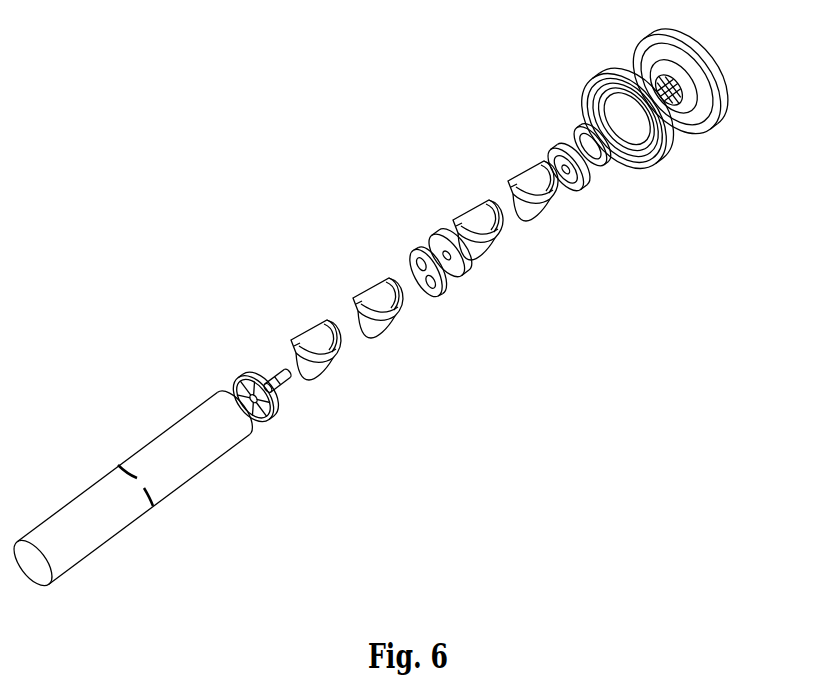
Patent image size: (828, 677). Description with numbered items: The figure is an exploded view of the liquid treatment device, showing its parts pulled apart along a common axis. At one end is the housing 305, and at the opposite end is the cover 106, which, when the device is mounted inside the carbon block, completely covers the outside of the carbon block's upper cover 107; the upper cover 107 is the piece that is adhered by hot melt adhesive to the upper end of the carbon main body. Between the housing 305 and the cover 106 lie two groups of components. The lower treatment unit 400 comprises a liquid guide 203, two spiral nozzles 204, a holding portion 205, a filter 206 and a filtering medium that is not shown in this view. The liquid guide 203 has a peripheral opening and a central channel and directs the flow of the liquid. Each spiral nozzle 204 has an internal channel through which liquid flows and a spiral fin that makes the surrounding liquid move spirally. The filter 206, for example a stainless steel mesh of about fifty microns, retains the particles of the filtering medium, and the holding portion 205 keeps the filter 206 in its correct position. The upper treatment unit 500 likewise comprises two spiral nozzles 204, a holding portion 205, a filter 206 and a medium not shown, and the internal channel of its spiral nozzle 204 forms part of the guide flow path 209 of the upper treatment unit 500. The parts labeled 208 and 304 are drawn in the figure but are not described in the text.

The cover 106 is at (715, 120).
The upper cover 107 is at (660, 152).
The ring spacer 208 is at (610, 162).
The guide flow path 209 is at (585, 173).
The spiral nozzle 204 is at (392, 325).
The funnel element 304 is at (332, 367).
The holding portion 205 is at (472, 273).
The filter 206 is at (440, 293).
The liquid guide 203 is at (275, 400).
The housing 305 is at (221, 439).
The lower treatment unit 400 is at (636, 300).
The upper treatment unit 500 is at (763, 200).